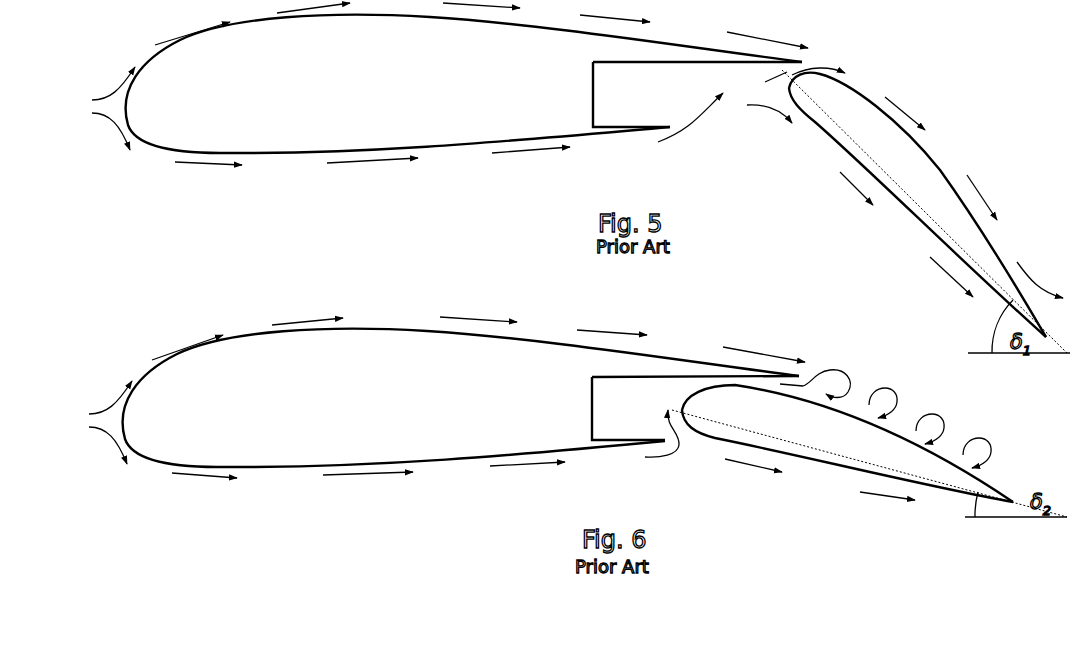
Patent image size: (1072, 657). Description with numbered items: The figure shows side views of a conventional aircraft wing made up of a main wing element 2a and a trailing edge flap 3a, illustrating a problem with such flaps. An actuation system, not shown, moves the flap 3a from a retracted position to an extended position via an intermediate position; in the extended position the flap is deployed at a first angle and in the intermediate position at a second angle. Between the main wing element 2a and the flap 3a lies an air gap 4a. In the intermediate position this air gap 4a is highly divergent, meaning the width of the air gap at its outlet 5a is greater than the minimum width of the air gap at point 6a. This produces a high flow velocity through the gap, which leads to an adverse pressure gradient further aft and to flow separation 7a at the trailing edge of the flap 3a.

In FIG. 5, the main wing element 2a is at (313, 132).
In FIG. 6, the main wing element 2a is at (313, 450).
In FIG. 5, the flap 3a is at (920, 177).
In FIG. 6, the flap 3a is at (850, 447).
In FIG. 6, the air gap 4a is at (662, 393).
In FIG. 6, the outlet 5a is at (800, 385).
In FIG. 6, the point 6a is at (745, 382).
In FIG. 6, the flow separation 7a is at (883, 402).